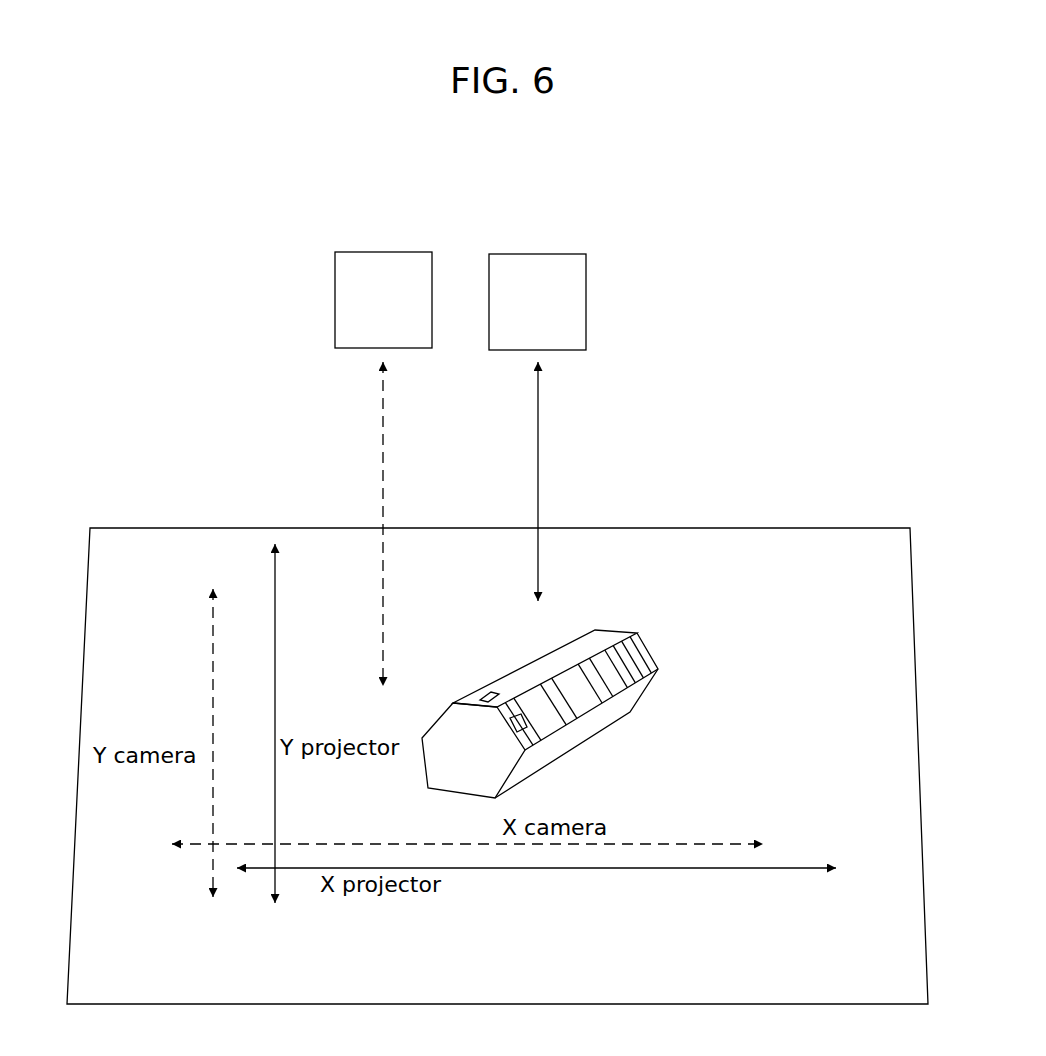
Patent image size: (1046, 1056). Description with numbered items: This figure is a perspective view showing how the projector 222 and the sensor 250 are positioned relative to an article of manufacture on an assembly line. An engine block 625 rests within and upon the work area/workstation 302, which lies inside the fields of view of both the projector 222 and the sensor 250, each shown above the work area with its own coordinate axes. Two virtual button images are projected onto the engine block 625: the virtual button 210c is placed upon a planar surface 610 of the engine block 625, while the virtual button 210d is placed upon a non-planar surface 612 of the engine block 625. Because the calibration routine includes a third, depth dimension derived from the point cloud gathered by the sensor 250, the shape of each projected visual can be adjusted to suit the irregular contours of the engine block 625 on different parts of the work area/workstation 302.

The sensor 250 is at (404, 252).
The projector 222 is at (549, 254).
The work area/workstation 302 is at (769, 518).
The planar surface 610 is at (600, 642).
The non-planar surface 612 is at (647, 658).
The engine block 625 is at (657, 707).
The virtual button image 210c is at (482, 693).
The virtual button image 210d is at (532, 733).